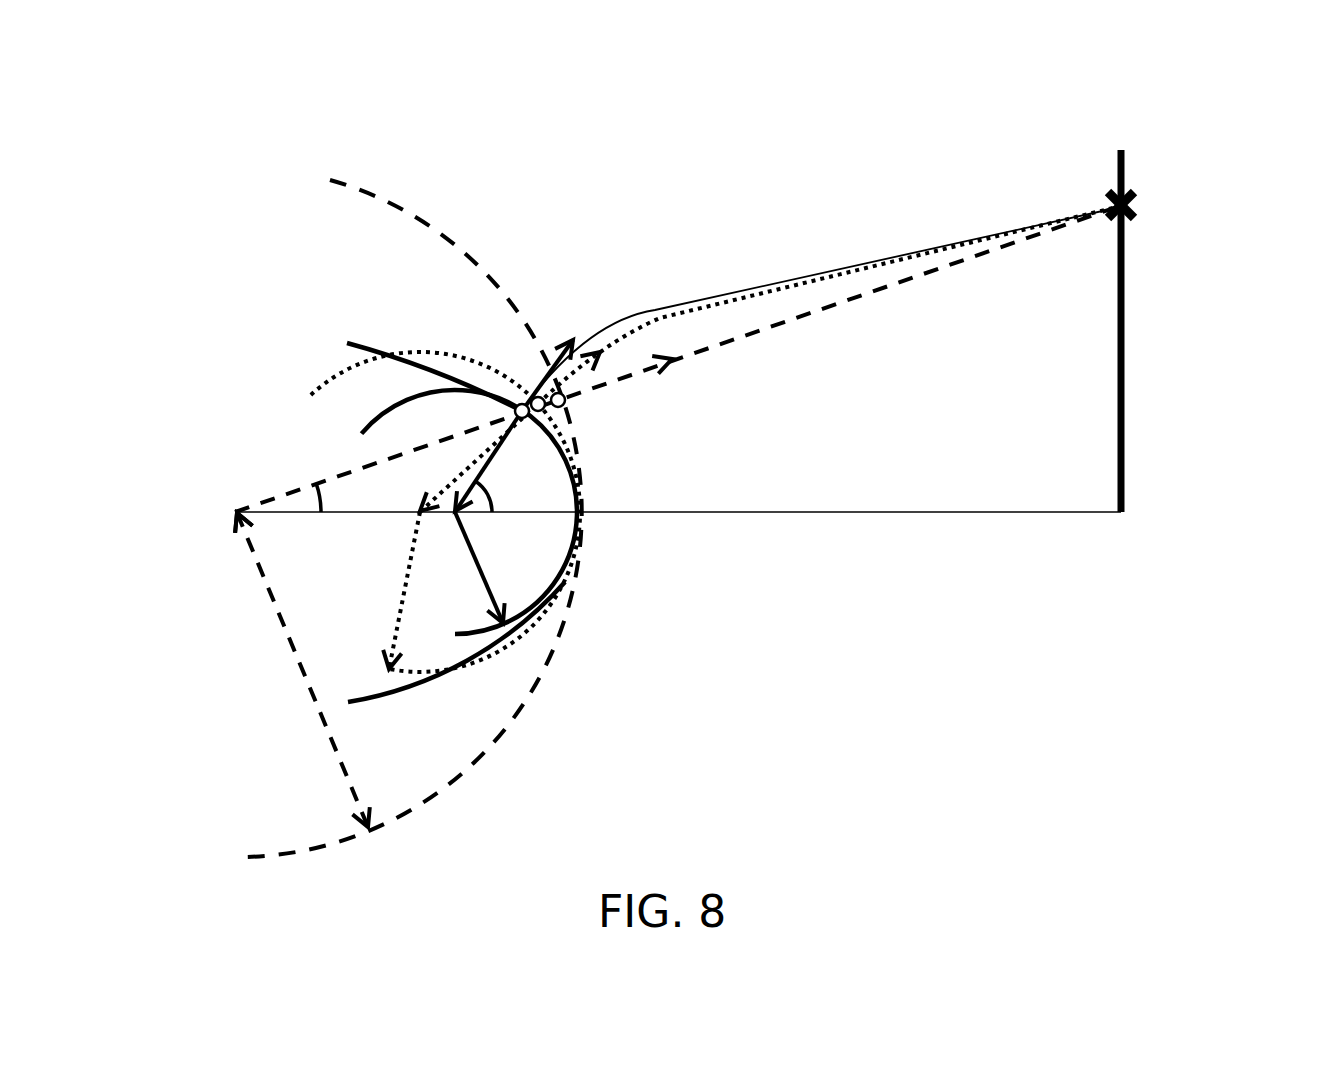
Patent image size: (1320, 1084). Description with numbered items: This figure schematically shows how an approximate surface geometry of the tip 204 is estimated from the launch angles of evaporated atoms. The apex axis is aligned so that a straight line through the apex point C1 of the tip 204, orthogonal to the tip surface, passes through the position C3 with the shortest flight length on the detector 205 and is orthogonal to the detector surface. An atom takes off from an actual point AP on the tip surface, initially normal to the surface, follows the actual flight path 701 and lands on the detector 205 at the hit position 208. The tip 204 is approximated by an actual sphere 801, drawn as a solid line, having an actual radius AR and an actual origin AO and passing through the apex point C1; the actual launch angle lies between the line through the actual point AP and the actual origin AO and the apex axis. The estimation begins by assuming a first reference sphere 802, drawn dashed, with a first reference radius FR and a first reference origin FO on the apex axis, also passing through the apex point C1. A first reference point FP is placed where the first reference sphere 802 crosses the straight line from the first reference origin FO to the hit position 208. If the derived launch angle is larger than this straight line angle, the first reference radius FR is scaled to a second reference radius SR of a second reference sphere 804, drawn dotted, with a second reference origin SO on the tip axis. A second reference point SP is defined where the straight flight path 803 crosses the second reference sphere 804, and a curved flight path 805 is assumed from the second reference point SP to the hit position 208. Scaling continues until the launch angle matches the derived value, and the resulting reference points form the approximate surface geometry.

The tip 204 is at (347, 343).
The detector 205 is at (1121, 140).
The hit position 208 is at (1140, 212).
The actual flight path 701 is at (853, 262).
The actual sphere 801 is at (350, 428).
The first reference sphere 802 is at (327, 180).
The straight flight path 803 is at (780, 322).
The second reference sphere 804 is at (315, 383).
The curved flight path 805 is at (667, 317).
The first reference origin FO is at (232, 515).
The first reference radius FR is at (260, 580).
The second reference origin SO is at (415, 515).
The second reference radius SR is at (395, 607).
The actual origin AO is at (450, 515).
The actual radius AR is at (490, 612).
The actual point AP is at (568, 440).
The second reference point SP is at (565, 420).
The first reference point FP is at (570, 402).
The apex point C1 is at (578, 515).
The position with the shortest flight length C3 is at (1121, 525).